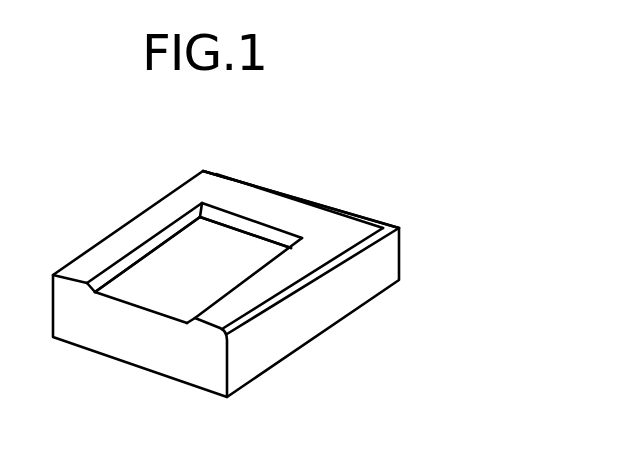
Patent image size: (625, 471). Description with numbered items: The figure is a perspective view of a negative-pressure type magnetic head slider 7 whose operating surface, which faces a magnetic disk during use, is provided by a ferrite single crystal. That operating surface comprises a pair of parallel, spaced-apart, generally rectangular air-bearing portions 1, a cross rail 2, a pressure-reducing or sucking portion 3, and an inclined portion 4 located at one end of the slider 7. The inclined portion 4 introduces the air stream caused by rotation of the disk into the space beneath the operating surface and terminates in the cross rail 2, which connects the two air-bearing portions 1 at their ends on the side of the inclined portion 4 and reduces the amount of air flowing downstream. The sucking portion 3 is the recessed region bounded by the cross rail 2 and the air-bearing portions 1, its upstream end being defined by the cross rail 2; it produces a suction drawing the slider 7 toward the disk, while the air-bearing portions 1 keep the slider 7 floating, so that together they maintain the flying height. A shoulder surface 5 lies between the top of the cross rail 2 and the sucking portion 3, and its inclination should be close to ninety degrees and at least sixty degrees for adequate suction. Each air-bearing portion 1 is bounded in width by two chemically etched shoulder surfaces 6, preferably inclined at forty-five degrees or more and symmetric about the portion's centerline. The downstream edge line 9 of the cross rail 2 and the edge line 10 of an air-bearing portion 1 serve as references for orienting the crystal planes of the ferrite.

The air-bearing portion 1 is at (117, 247).
The cross rail 2 is at (290, 212).
The pressure-reducing or sucking portion 3 is at (152, 288).
The inclined portion 4 is at (278, 192).
The shoulder surface 5 is at (252, 228).
The shoulder surface 6 is at (163, 240).
The magnetic head slider 7 is at (270, 275).
The edge line 9 is at (215, 203).
The edge line 10 is at (147, 240).